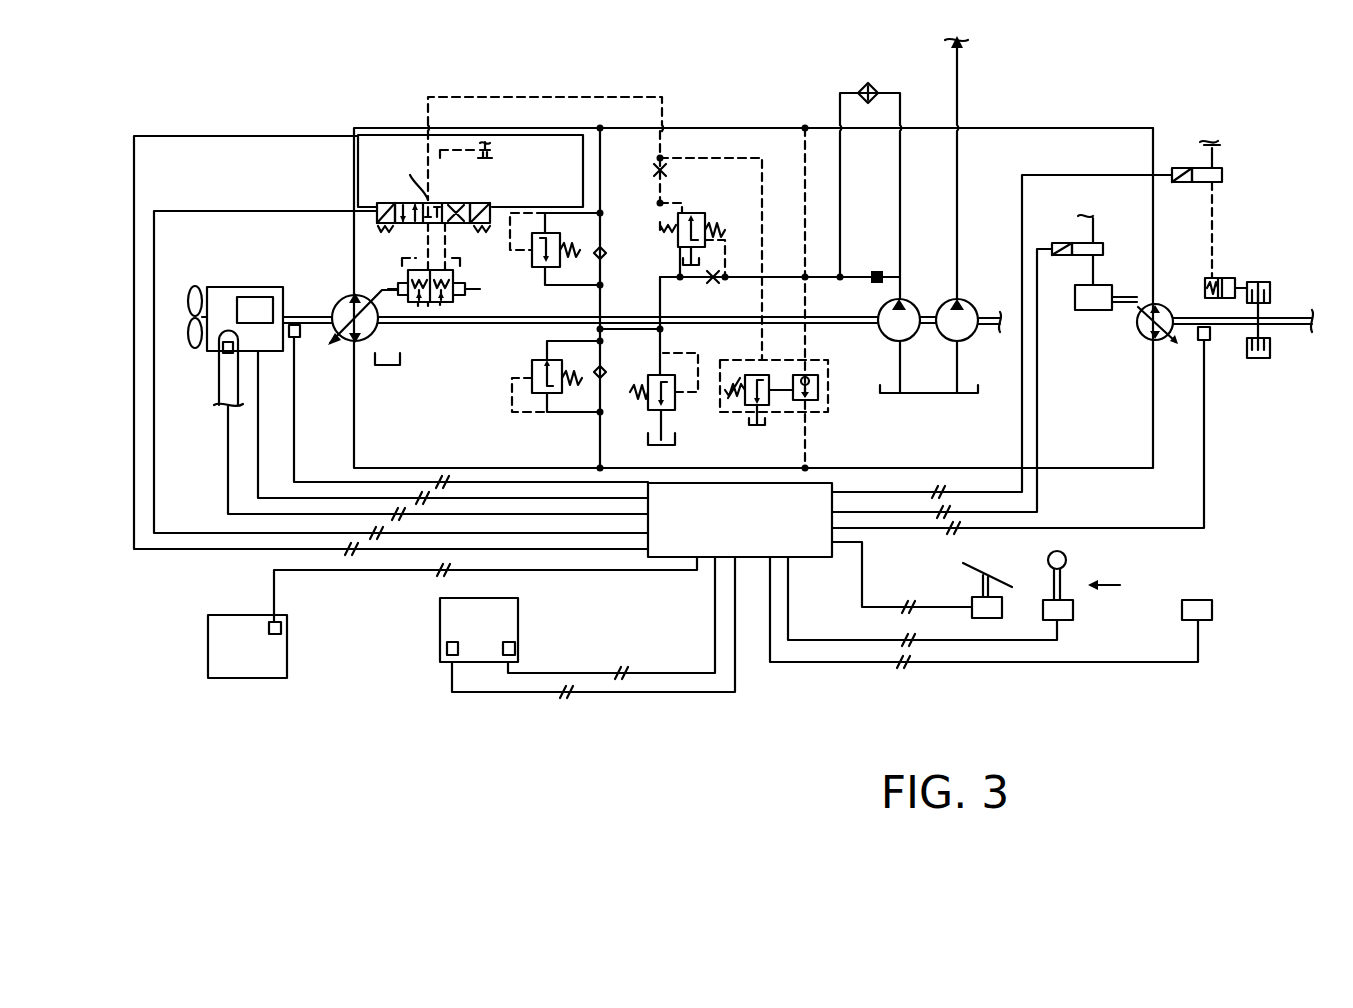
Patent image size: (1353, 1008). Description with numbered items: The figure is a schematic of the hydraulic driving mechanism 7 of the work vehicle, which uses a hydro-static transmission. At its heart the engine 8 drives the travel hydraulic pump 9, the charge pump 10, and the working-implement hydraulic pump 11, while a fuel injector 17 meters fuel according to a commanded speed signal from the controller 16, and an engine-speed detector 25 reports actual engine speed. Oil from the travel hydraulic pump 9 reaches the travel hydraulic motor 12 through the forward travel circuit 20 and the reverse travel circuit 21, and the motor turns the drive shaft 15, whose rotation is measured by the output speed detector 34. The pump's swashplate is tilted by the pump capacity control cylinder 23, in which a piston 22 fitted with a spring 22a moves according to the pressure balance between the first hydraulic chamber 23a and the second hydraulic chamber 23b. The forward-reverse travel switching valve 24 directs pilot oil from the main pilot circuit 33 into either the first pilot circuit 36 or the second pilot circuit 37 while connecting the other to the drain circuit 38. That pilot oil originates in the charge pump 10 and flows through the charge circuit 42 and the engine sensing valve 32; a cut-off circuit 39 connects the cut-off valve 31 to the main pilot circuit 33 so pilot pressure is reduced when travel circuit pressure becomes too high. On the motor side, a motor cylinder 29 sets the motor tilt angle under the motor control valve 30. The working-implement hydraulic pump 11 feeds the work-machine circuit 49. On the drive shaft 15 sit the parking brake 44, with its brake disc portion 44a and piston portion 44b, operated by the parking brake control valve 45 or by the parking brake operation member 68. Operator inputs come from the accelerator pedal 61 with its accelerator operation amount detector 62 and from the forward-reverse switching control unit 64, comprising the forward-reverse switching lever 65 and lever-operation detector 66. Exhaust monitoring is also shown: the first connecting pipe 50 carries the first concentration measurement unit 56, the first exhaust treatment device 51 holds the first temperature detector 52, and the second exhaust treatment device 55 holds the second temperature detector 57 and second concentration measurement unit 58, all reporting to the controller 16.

The hydraulic driving mechanism 7 is at (360, 85).
The engine 8 is at (275, 352).
The travel hydraulic pump 9 is at (342, 302).
The charge pump 10 is at (886, 338).
The working-implement hydraulic pump 11 is at (975, 341).
The travel hydraulic motor 12 is at (1150, 342).
The drive shaft 15 is at (1305, 318).
The controller 16 is at (797, 558).
The fuel injector 17 is at (243, 297).
The forward travel circuit 20 is at (920, 468).
The reverse travel circuit 21 is at (708, 126).
The piston 22 is at (428, 302).
The spring 22a is at (393, 285).
The pump capacity control cylinder 23 is at (455, 298).
The first hydraulic chamber 23a is at (440, 302).
The second hydraulic chamber 23b is at (418, 302).
The forward-reverse travel switching valve 24 is at (390, 200).
The engine-speed detector 25 is at (300, 338).
The motor cylinder 29 is at (1093, 310).
The motor control valve 30 is at (1103, 250).
The cut-off valve 31 is at (820, 420).
The engine sensing valve 32 is at (698, 212).
The main pilot circuit 33 is at (572, 93).
The output speed detector 34 is at (1208, 342).
The first pilot circuit 36 is at (446, 241).
The second pilot circuit 37 is at (424, 241).
The drain circuit 38 is at (500, 155).
The cut-off circuit 39 is at (762, 180).
The charge circuit 42 is at (877, 93).
The parking brake 44 is at (1252, 284).
The brake disc portion 44a is at (1265, 360).
The piston portion 44b is at (1205, 292).
The parking brake control valve 45 is at (1222, 175).
The work-machine circuit 49 is at (958, 100).
The first connecting pipe 50 is at (222, 330).
The first exhaust treatment device 51 is at (288, 662).
The first temperature detector 52 is at (282, 628).
The second exhaust treatment device 55 is at (518, 606).
The first concentration measurement unit 56 is at (219, 355).
The second temperature detector 57 is at (515, 650).
The second concentration measurement unit 58 is at (447, 650).
The accelerator pedal 61 is at (998, 582).
The accelerator operation amount detector 62 is at (972, 605).
The forward-reverse switching control unit 64 is at (1120, 585).
The forward-reverse switching lever 65 is at (1065, 568).
The lever-operation detector 66 is at (1073, 614).
The parking brake operation member 68 is at (1212, 612).